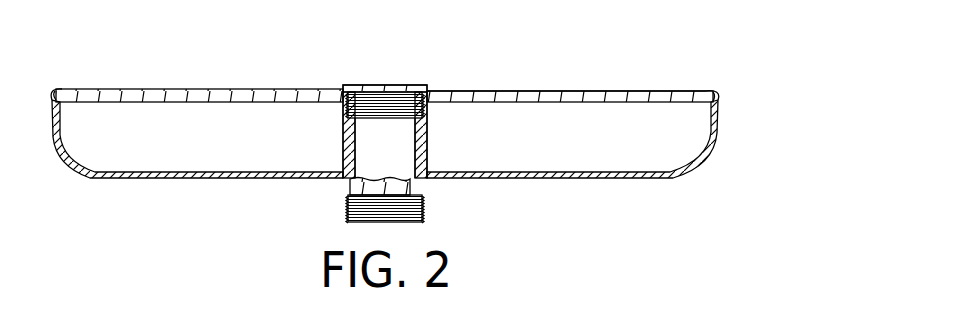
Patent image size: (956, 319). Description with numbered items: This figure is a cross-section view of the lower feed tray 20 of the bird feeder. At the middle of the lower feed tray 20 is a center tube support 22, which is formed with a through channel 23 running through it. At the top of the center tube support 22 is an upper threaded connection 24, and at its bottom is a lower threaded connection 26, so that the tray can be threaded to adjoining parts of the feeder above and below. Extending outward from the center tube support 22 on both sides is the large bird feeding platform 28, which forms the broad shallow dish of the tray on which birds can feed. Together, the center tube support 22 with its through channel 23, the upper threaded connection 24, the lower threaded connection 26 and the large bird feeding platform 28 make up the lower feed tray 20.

The lower feed tray 20 is at (721, 118).
The center tube support 22 is at (421, 140).
The through channel 23 is at (367, 150).
The upper threaded connection 24 is at (397, 103).
The lower threaded connection 26 is at (412, 207).
The large bird feeding platform 28 is at (568, 97).